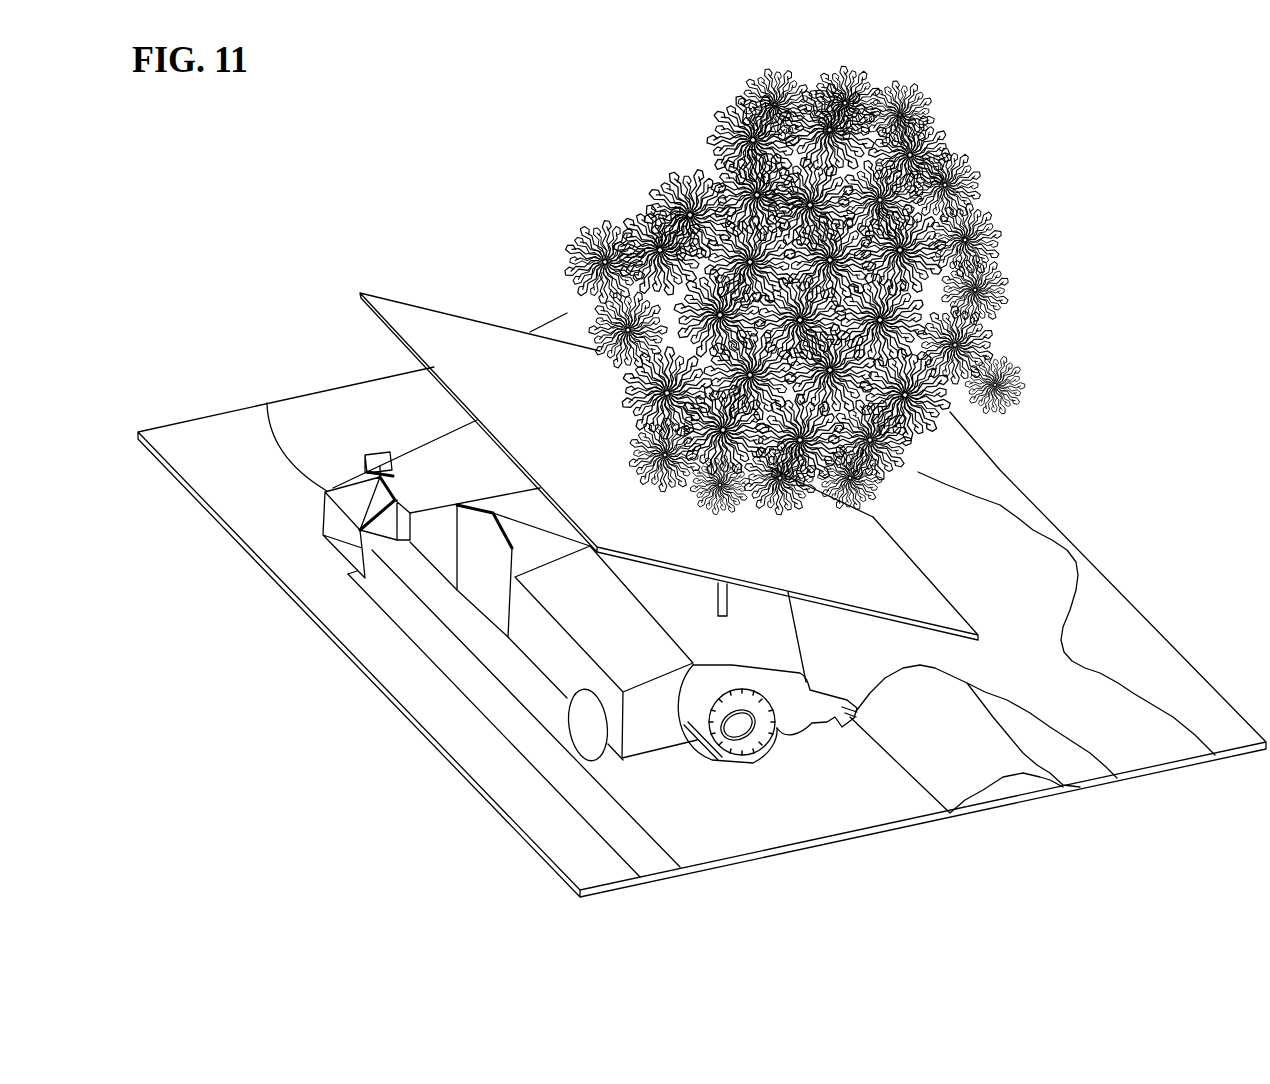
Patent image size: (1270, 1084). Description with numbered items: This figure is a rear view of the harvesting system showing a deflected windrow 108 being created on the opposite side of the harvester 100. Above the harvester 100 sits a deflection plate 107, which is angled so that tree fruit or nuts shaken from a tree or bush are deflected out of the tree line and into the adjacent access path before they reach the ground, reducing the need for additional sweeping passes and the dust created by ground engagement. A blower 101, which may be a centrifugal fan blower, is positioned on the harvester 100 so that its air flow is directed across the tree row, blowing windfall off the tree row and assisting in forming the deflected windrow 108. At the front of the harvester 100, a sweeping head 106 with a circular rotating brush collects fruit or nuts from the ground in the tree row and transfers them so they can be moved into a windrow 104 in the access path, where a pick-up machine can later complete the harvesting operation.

The harvester 100 is at (523, 606).
The blower 101 is at (808, 708).
The windrow 104 is at (580, 787).
The sweeping head 106 is at (407, 455).
The deflection plate 107 is at (455, 342).
The deflected windrow 108 is at (1103, 720).